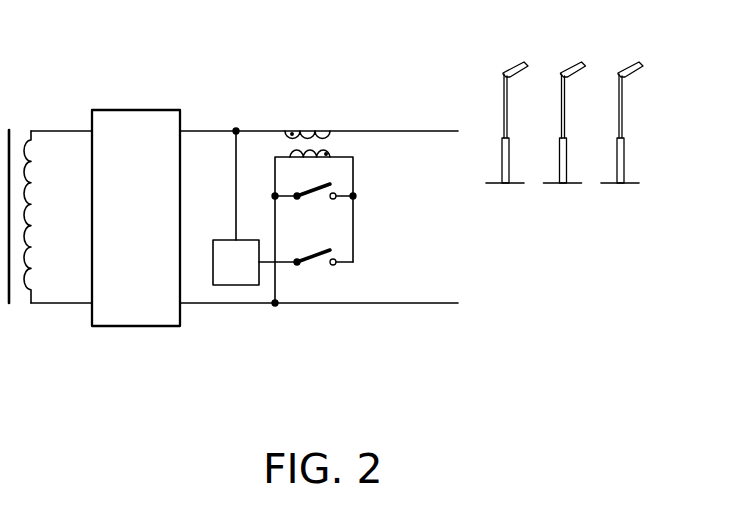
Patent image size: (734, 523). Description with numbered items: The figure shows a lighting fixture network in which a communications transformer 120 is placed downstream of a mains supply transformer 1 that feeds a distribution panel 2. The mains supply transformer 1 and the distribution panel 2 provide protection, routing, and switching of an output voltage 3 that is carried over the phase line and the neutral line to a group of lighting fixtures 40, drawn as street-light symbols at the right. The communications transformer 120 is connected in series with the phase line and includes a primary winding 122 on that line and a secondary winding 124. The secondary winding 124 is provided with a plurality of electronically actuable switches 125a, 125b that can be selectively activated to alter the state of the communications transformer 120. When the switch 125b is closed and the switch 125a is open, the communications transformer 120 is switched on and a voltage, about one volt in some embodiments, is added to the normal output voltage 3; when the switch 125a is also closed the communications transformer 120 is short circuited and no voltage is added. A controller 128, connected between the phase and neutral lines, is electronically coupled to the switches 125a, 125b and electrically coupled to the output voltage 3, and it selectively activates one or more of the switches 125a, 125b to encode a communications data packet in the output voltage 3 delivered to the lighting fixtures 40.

The mains supply transformer 1 is at (23, 123).
The distribution panel 2 is at (135, 110).
The output voltage 3 is at (466, 251).
The communications transformer 120 is at (305, 206).
The primary winding 122 is at (305, 126).
The secondary winding 124 is at (332, 151).
The electronically actuable switch 125a is at (313, 200).
The electronically actuable switch 125b is at (313, 266).
The controller 128 is at (236, 285).
The lighting fixtures 40 is at (588, 213).